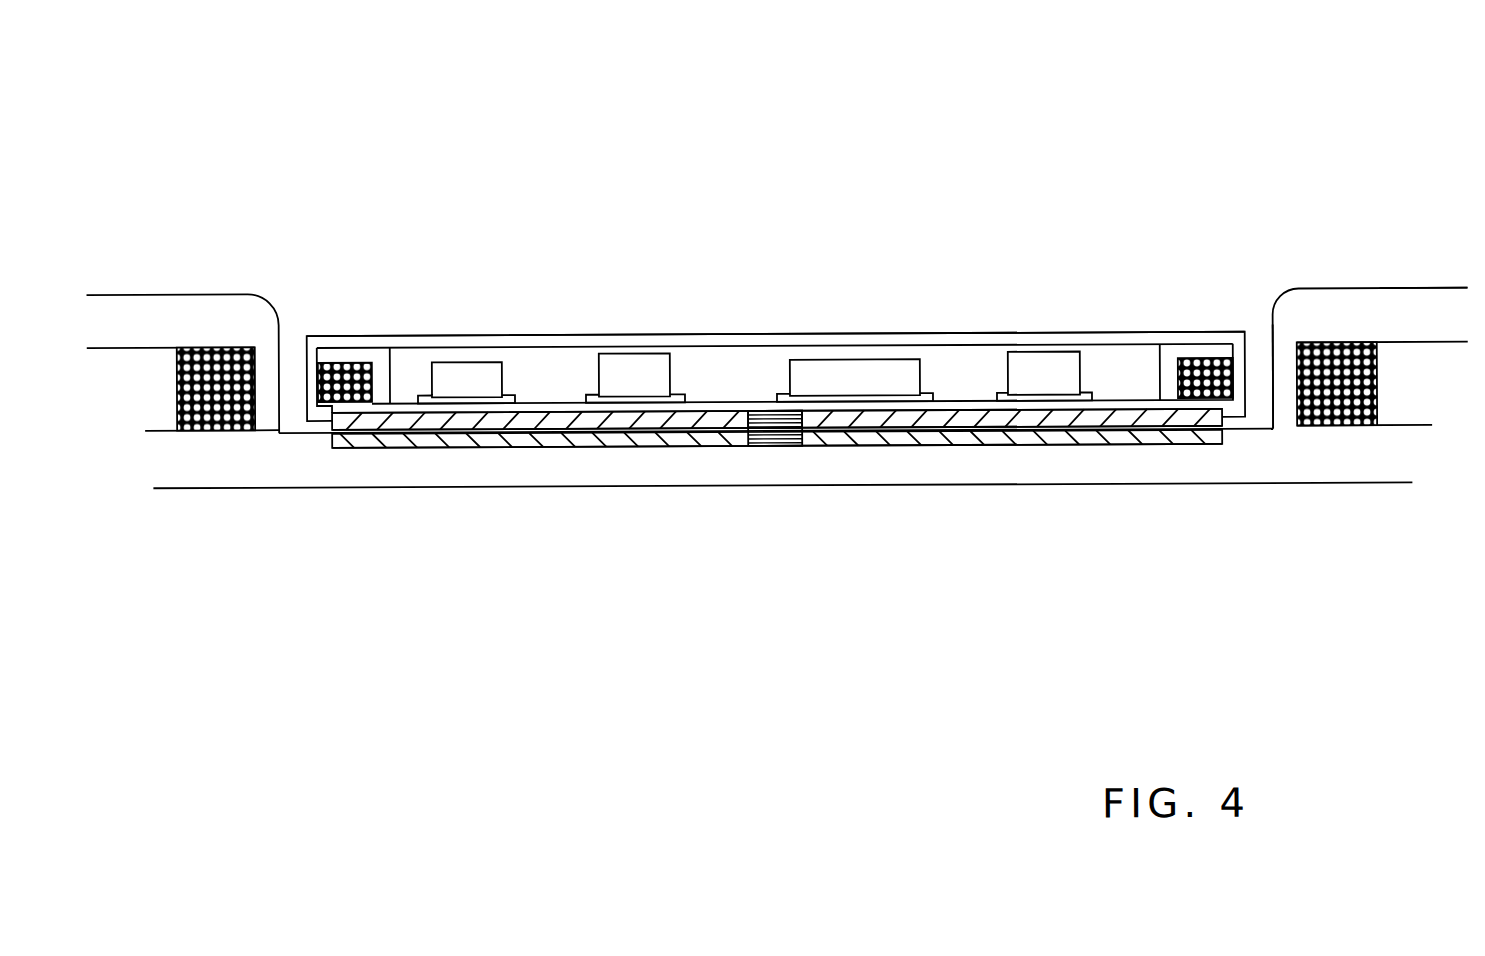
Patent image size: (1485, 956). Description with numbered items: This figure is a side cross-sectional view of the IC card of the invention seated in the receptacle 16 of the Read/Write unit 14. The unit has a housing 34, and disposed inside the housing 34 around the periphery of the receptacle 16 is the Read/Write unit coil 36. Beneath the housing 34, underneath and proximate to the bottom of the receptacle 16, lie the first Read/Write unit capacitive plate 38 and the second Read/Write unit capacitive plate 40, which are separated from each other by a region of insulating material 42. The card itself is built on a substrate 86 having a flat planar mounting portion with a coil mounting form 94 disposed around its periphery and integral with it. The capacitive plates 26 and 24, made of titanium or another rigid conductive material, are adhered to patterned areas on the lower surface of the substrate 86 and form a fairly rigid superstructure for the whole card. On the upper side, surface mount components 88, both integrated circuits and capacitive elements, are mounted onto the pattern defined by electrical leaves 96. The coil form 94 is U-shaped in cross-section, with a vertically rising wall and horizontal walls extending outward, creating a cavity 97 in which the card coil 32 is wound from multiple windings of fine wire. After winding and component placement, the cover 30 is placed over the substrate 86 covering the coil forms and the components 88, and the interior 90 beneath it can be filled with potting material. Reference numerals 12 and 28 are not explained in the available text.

The module housing 12 is at (465, 339).
The Read/Write unit 14 is at (1452, 286).
The receptacle 16 is at (1258, 342).
The capacitive plate 24 is at (958, 419).
The capacitive plate 26 is at (713, 423).
The upper via contact 28 is at (763, 418).
The cover 30 is at (998, 338).
The card coil 32 is at (357, 381).
The housing 34 is at (149, 290).
The Read/Write unit coil 36 is at (237, 347).
The first Read/Write unit capacitive plate 38 is at (960, 444).
The second Read/Write unit capacitive plate 40 is at (487, 442).
The insulating material 42 is at (768, 443).
The substrate 86 is at (560, 414).
The surface mount components 88 is at (850, 363).
The interior 90 is at (523, 372).
The coil mounting form 94 is at (385, 401).
The electrical leaves 96 is at (1130, 400).
The cavity 97 is at (352, 406).